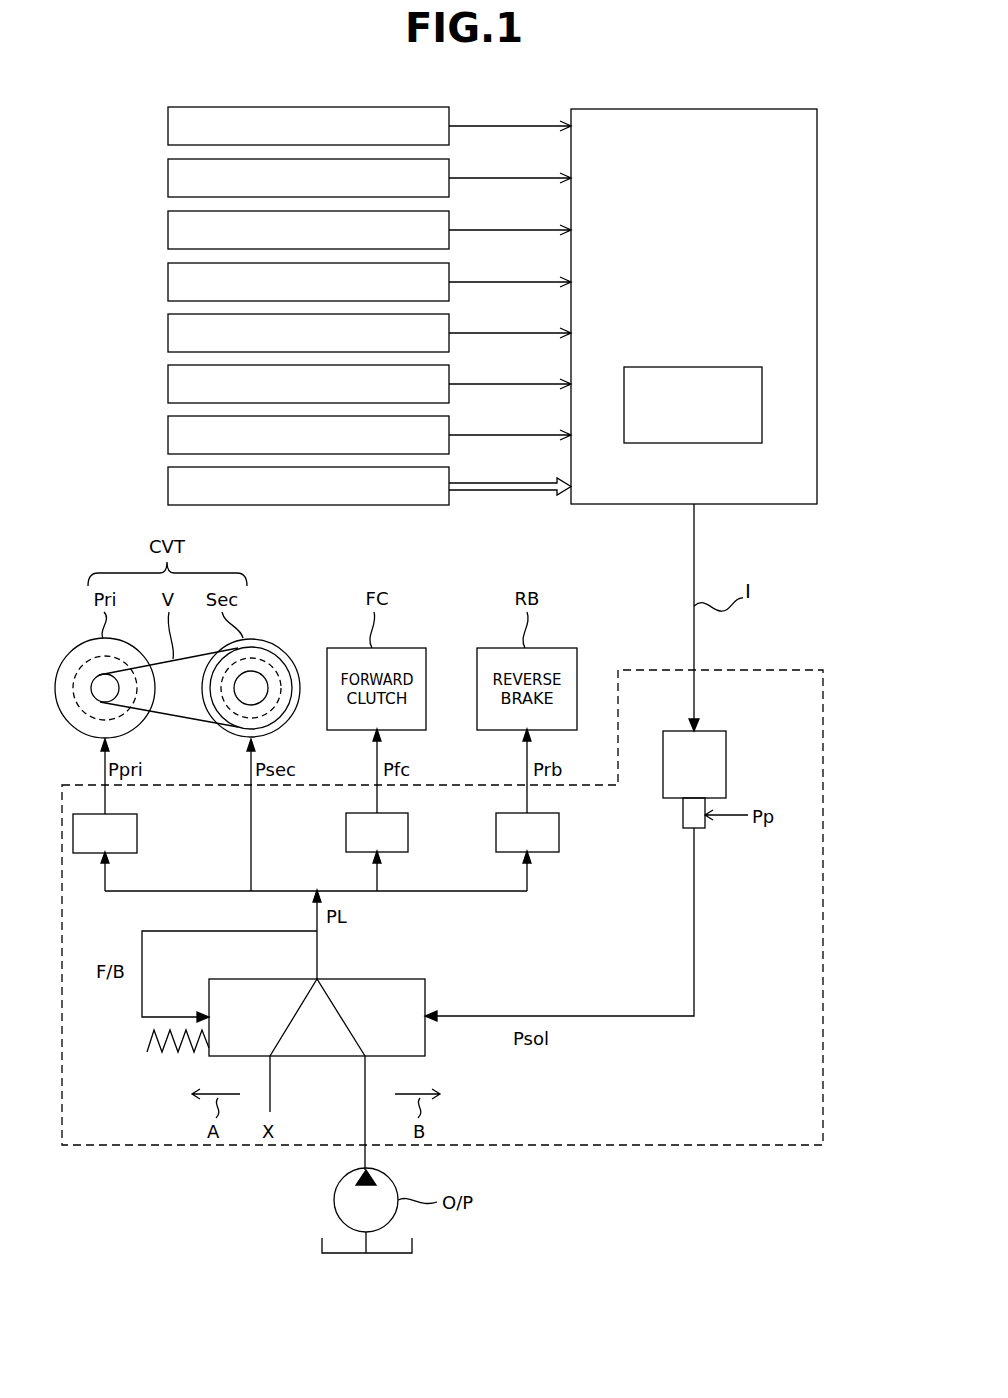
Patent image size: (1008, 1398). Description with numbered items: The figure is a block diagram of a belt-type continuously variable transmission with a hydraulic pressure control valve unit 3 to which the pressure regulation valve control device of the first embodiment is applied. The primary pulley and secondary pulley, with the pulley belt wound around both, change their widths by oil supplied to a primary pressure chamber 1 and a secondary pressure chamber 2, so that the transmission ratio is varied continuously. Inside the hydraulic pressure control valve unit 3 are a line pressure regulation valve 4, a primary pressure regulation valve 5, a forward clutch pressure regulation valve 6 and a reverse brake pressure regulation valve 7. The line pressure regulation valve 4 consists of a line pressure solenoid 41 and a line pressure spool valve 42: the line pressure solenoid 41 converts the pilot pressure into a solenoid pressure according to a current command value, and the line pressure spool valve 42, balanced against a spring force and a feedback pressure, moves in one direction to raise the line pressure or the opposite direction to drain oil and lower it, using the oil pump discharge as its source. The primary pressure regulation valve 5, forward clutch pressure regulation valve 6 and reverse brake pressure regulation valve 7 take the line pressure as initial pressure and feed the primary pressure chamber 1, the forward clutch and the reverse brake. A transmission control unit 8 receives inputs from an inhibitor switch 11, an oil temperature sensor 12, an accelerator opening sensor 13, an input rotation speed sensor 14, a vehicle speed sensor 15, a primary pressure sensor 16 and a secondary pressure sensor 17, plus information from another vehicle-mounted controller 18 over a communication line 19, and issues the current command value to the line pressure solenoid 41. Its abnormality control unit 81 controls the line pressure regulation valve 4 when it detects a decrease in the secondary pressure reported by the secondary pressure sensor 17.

The primary pressure chamber 1 is at (69, 657).
The secondary pressure chamber 2 is at (285, 657).
The hydraulic pressure control valve unit 3 is at (701, 1146).
The line pressure regulation valve 4 is at (467, 893).
The line pressure solenoid 41 is at (675, 798).
The line pressure spool valve 42 is at (425, 986).
The primary pressure regulation valve 5 is at (137, 836).
The forward clutch pressure regulation valve 6 is at (408, 834).
The reverse brake pressure regulation valve 7 is at (559, 834).
The CVT control unit 8 is at (723, 276).
The abnormality control unit 81 is at (762, 408).
The inhibitor switch 11 is at (168, 124).
The CVT oil temperature sensor 12 is at (168, 176).
The accelerator opening sensor 13 is at (168, 228).
The CVT input rotation speed sensor 14 is at (168, 280).
The vehicle speed sensor 15 is at (168, 331).
The primary pressure sensor 16 is at (168, 382).
The secondary pressure sensor 17 is at (168, 433).
The vehicle-mounted controller 18 is at (168, 484).
The CAN communication line 19 is at (509, 491).